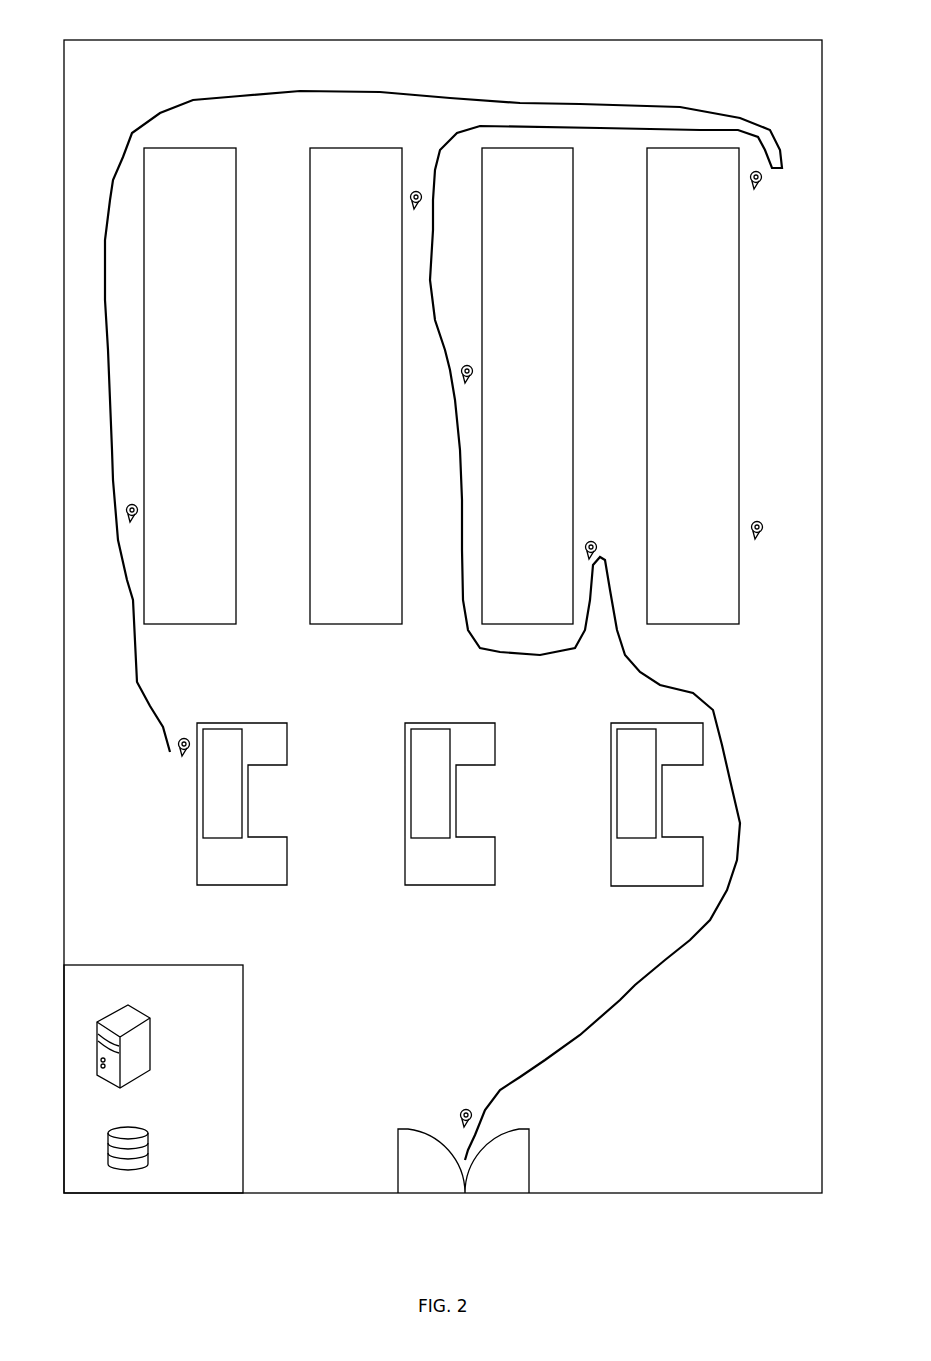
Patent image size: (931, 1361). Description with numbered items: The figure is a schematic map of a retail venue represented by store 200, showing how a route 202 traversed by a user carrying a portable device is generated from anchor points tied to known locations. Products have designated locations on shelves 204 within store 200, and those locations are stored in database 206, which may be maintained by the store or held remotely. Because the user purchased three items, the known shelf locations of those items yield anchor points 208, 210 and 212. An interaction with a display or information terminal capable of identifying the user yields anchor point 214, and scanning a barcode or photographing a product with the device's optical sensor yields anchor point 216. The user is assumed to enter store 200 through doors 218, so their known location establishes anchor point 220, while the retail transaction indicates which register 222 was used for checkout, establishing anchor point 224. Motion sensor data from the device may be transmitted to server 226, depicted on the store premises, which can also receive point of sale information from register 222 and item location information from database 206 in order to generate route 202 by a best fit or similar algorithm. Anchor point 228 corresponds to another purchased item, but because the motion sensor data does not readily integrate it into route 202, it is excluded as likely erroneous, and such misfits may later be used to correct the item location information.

The store 200 is at (431, 39).
The route 202 is at (635, 985).
The shelves 204 is at (349, 625).
The database 206 is at (150, 1145).
The anchor point 208 is at (137, 509).
The anchor point 210 is at (472, 376).
The anchor point 212 is at (585, 548).
The anchor point 214 is at (411, 203).
The anchor point 216 is at (750, 184).
The doors 218 is at (531, 1162).
The anchor point 220 is at (459, 1111).
The register 222 is at (263, 720).
The anchor point 224 is at (180, 757).
The server 226 is at (153, 1040).
The anchor point 228 is at (751, 526).